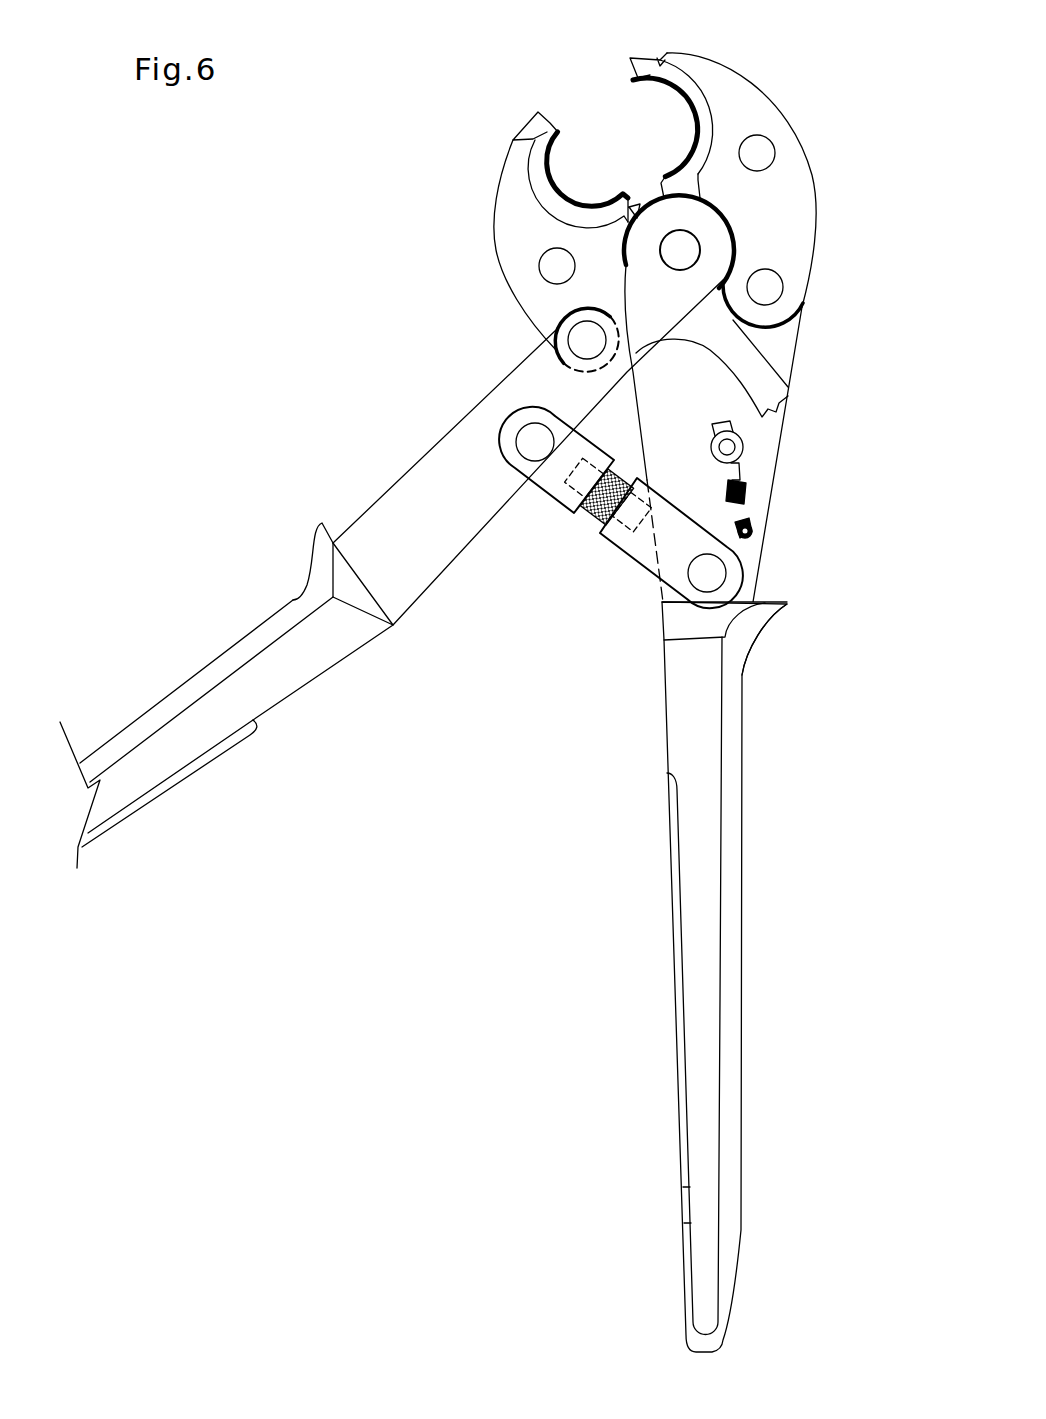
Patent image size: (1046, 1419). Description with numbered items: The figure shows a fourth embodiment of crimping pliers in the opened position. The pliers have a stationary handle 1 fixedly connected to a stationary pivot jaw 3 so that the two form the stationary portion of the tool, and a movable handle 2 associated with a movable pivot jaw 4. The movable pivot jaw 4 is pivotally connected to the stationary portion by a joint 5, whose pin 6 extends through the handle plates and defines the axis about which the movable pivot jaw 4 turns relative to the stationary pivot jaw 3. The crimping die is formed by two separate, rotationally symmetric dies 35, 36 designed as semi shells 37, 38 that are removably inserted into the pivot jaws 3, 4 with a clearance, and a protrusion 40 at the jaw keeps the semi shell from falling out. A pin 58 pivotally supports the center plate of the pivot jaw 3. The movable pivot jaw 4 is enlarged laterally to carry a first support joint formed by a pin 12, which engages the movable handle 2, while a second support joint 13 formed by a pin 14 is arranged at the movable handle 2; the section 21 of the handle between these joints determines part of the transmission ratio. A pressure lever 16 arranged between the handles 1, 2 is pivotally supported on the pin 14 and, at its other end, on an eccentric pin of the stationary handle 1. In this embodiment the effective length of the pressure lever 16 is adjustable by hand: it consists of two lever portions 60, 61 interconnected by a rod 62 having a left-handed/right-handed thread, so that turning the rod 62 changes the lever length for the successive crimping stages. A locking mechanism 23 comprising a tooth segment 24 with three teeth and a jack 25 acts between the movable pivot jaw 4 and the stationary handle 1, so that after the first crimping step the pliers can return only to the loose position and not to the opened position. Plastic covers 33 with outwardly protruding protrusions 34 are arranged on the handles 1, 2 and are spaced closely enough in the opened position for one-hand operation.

The stationary handle 1 is at (766, 943).
The movable handle 2 is at (163, 800).
The stationary pivot jaw 3 is at (797, 173).
The movable pivot jaw 4 is at (515, 238).
The joint 5 is at (707, 232).
The pin 6 is at (694, 250).
The pin 12 is at (583, 340).
The second support joint 13 is at (493, 420).
The pin 14 is at (527, 443).
The pressure lever 16 is at (533, 540).
The section 21 is at (533, 382).
The locking mechanism 23 is at (768, 452).
The tooth segment 24 is at (765, 380).
The jack 25 is at (730, 428).
The plastic covers 33 is at (732, 717).
The protrusions 34 is at (773, 610).
The die 35 is at (695, 73).
The die 36 is at (521, 170).
The semi shell 37 is at (700, 113).
The semi shell 38 is at (547, 193).
The protrusion 40 is at (638, 70).
The pin 58 is at (767, 287).
The lever portion 60 is at (549, 478).
The lever portion 61 is at (633, 540).
The rod 62 is at (590, 517).